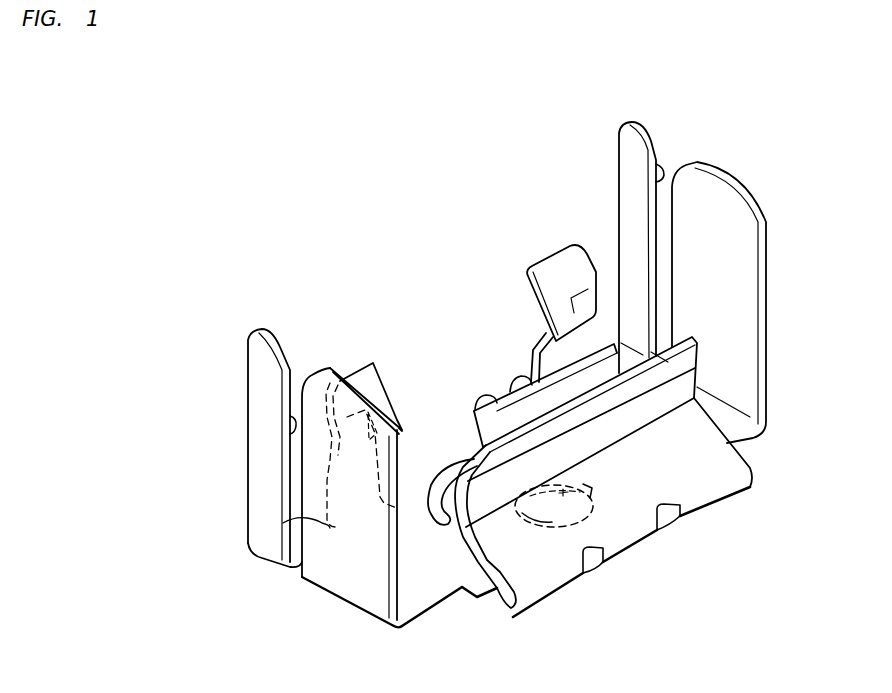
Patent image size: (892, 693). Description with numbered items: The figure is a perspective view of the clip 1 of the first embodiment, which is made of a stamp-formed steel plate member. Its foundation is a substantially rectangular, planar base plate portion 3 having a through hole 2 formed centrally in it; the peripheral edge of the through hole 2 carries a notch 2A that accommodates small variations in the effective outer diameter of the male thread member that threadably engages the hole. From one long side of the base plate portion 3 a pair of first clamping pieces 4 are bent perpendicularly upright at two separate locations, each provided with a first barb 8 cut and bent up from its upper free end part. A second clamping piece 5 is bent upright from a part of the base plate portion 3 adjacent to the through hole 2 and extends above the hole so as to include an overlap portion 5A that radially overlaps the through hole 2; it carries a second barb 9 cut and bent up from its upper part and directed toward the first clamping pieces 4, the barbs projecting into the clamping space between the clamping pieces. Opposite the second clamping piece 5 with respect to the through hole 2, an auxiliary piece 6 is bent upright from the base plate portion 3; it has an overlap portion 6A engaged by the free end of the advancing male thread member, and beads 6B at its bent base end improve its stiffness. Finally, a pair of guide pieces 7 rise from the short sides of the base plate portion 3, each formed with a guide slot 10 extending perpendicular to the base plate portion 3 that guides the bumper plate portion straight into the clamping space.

The clip 1 is at (470, 255).
The through hole 2 is at (550, 525).
The notch 2A is at (590, 496).
The base plate portion 3 is at (413, 590).
The first clamping piece 4 is at (362, 362).
The second clamping piece 5 is at (440, 471).
The overlap portion 5A is at (462, 453).
The auxiliary piece 6 is at (731, 447).
The overlap portion 6A is at (478, 507).
The bead 6B is at (594, 572).
The guide piece 7 is at (261, 340).
The first barb 8 is at (401, 428).
The second barb 9 is at (520, 376).
The guide slot 10 is at (294, 428).